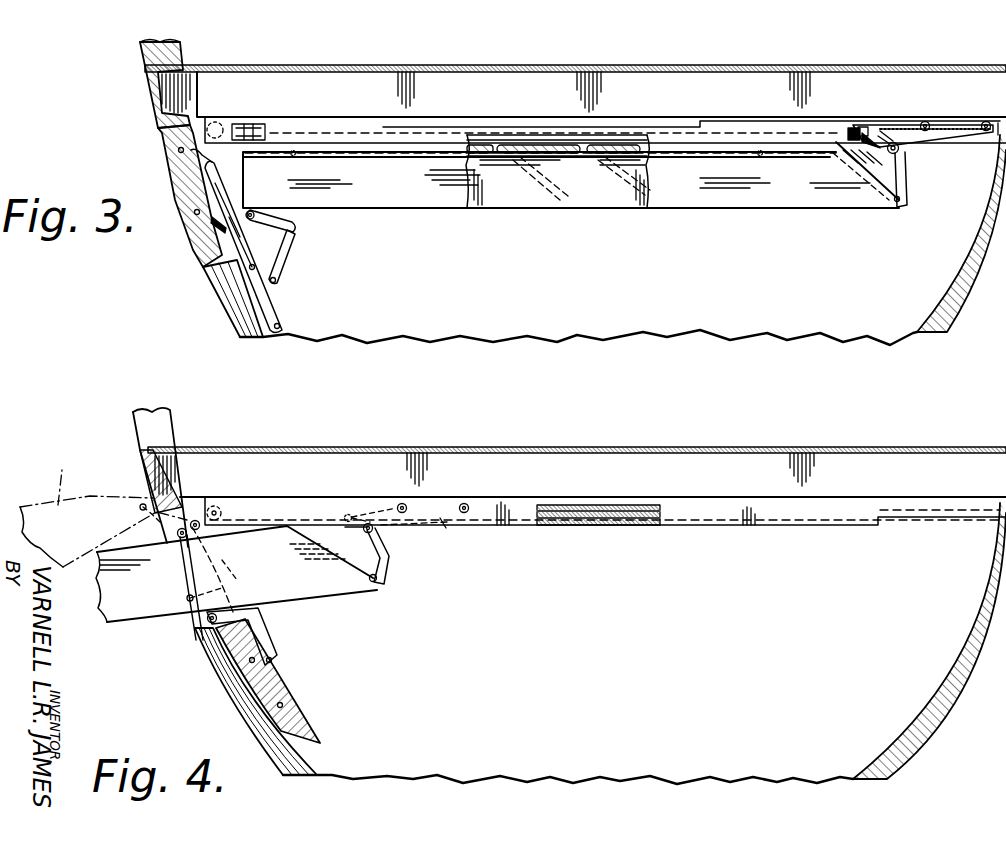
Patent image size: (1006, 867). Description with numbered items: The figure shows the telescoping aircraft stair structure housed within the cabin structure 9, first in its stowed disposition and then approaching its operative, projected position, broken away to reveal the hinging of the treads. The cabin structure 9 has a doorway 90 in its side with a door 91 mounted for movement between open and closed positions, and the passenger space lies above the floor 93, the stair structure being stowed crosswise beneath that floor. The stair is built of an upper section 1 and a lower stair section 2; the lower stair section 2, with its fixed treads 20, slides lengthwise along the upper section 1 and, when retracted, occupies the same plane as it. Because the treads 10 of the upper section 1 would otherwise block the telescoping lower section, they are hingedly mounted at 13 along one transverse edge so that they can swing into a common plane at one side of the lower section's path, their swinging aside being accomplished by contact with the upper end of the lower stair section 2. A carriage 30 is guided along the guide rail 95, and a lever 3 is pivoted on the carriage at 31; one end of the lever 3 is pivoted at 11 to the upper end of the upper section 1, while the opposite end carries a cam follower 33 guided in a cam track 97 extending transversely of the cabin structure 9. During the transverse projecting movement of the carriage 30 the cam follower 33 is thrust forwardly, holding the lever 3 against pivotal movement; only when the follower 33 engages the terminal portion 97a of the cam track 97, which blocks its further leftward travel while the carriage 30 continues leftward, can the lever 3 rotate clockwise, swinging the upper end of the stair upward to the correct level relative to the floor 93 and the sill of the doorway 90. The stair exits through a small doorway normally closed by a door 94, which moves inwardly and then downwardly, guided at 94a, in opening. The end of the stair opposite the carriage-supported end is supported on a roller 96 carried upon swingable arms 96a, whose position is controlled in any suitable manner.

In FIG. 3, the upper section 1 is at (770, 196).
In FIG. 4, the upper section 1 is at (143, 612).
In FIG. 3, the lower stair section 2 is at (517, 197).
In FIG. 3, the lever 3 is at (906, 188).
In FIG. 4, the lever 3 is at (158, 522).
In FIG. 3, the cabin structure 9 is at (235, 308).
In FIG. 4, the cabin structure 9 is at (1003, 436).
In FIG. 3, the treads of the upper section 10 is at (594, 147).
In FIG. 3, the pivot 11 is at (897, 208).
In FIG. 4, the pivot 11 is at (377, 590).
In FIG. 3, the hinge mounting 13 is at (497, 146).
In FIG. 3, the fixed treads 20 is at (553, 198).
In FIG. 3, the carriage 30 is at (928, 140).
In FIG. 4, the carriage 30 is at (447, 523).
In FIG. 3, the pivot 31 is at (900, 156).
In FIG. 4, the pivot 31 is at (366, 530).
In FIG. 3, the cam follower 33 is at (863, 127).
In FIG. 4, the cam follower 33 is at (349, 514).
In FIG. 4, the doorway 90 is at (160, 424).
In FIG. 3, the door 91 is at (140, 50).
In FIG. 3, the floor 93 is at (345, 66).
In FIG. 4, the floor 93 is at (772, 450).
In FIG. 3, the door 94 is at (173, 163).
In FIG. 4, the door 94 is at (295, 708).
In FIG. 3, the guide 94a is at (218, 188).
In FIG. 4, the guide 94a is at (226, 570).
In FIG. 3, the guide rail 95 is at (896, 120).
In FIG. 4, the guide rail 95 is at (643, 506).
In FIG. 3, the roller 96 is at (280, 224).
In FIG. 4, the roller 96 is at (202, 617).
In FIG. 3, the swingable arms 96a is at (283, 267).
In FIG. 4, the swingable arms 96a is at (266, 640).
In FIG. 3, the cam track 97 is at (253, 128).
In FIG. 4, the cam track 97 is at (571, 525).
In FIG. 3, the terminal portion 97a is at (218, 122).
In FIG. 4, the terminal portion 97a is at (216, 503).